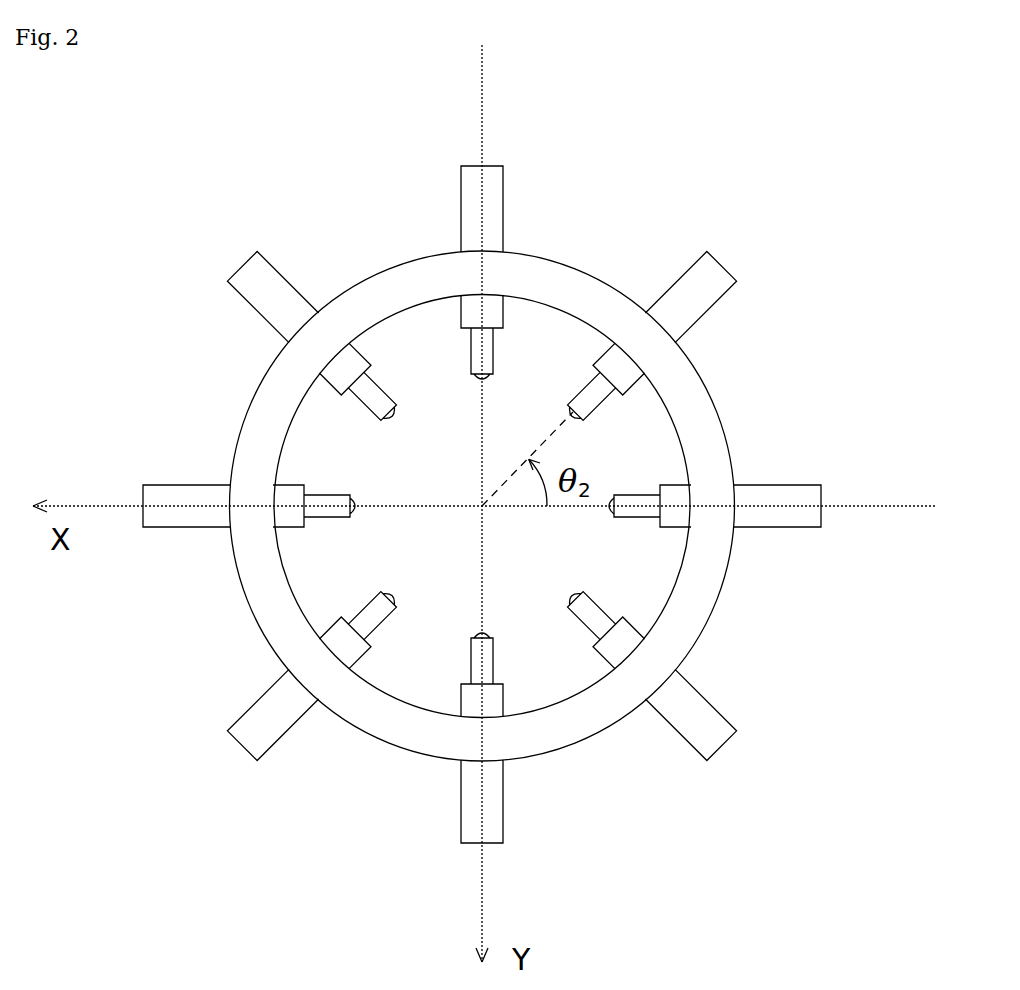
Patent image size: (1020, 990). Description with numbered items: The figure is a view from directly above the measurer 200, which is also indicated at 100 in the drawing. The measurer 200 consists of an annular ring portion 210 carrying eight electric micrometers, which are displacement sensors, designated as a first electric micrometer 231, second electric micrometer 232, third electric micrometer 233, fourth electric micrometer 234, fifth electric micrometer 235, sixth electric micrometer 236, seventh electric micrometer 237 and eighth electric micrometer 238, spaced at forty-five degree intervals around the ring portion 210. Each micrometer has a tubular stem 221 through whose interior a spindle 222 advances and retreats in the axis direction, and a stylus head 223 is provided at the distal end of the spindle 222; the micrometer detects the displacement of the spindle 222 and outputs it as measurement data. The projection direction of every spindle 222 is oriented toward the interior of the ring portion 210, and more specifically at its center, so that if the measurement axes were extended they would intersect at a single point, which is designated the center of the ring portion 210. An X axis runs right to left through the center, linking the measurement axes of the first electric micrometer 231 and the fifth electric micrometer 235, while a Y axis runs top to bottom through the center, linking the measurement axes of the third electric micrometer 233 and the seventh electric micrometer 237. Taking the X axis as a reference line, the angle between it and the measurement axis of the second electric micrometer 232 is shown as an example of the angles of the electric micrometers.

The measurement target 100 is at (668, 192).
The measurer 200 is at (146, 274).
The ring portion 210 is at (558, 290).
The stem 221 is at (800, 520).
The spindle 222 is at (622, 497).
The stylus head 223 is at (607, 509).
The first electric micrometer 231 is at (760, 484).
The second electric micrometer 232 is at (712, 267).
The third electric micrometer 233 is at (492, 203).
The fourth electric micrometer 234 is at (257, 272).
The fifth electric micrometer 235 is at (190, 492).
The sixth electric micrometer 236 is at (253, 748).
The seventh electric micrometer 237 is at (480, 813).
The eighth electric micrometer 238 is at (718, 733).